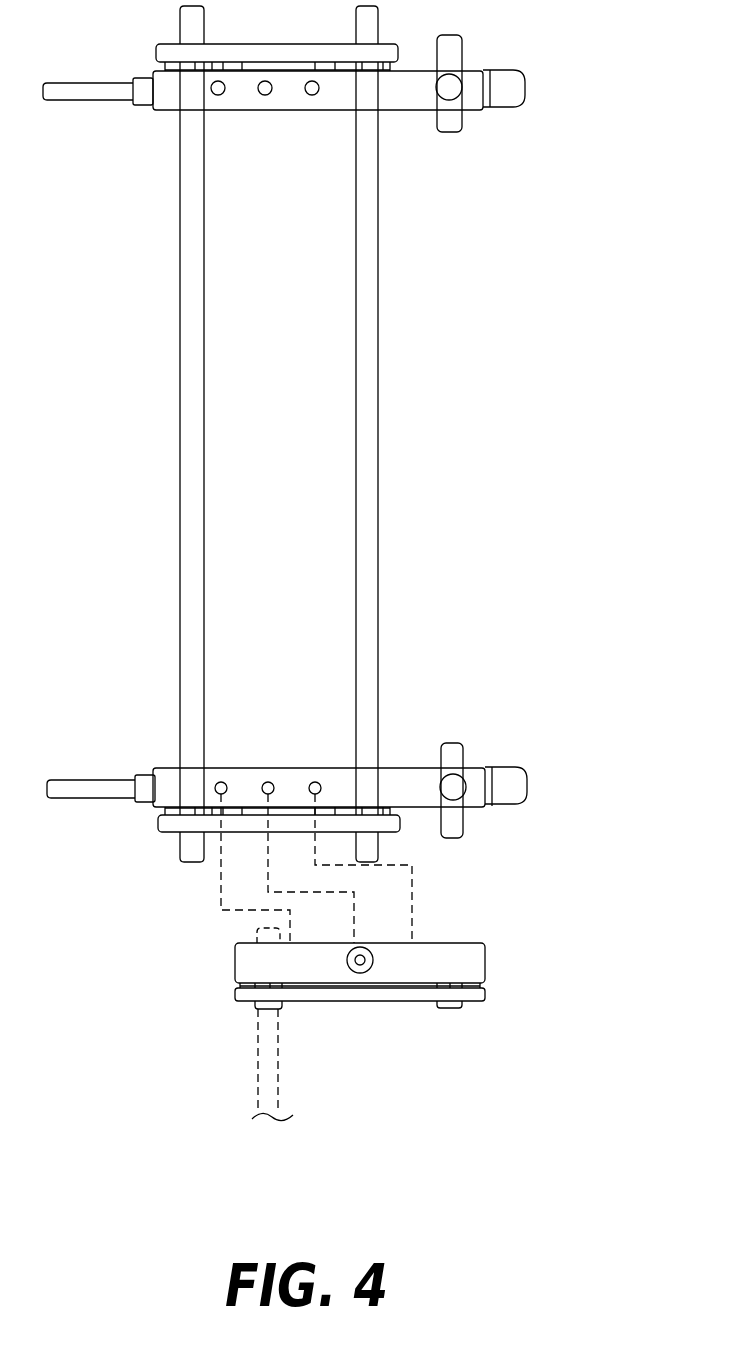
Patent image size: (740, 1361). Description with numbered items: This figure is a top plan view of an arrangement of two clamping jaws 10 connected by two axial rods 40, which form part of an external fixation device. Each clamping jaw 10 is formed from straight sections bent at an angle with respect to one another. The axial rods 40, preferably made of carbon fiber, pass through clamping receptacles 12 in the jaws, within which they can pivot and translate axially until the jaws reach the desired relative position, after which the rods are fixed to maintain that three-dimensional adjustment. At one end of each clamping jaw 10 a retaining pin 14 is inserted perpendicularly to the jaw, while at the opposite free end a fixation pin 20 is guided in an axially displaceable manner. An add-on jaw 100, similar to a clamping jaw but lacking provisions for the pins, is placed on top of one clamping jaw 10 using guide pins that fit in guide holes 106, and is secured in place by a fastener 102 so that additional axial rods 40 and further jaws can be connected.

The clamping jaw 10 is at (476, 110).
The clamping receptacle 12 is at (178, 833).
The retaining pin 14 is at (447, 133).
The fixation pin 20 is at (60, 102).
The axial rod 40 is at (180, 350).
The add-on jaw 100 is at (235, 958).
The fastener 102 is at (360, 968).
The guide hole 106 is at (314, 781).